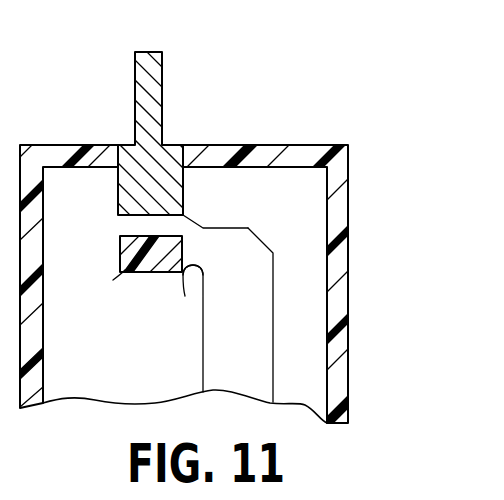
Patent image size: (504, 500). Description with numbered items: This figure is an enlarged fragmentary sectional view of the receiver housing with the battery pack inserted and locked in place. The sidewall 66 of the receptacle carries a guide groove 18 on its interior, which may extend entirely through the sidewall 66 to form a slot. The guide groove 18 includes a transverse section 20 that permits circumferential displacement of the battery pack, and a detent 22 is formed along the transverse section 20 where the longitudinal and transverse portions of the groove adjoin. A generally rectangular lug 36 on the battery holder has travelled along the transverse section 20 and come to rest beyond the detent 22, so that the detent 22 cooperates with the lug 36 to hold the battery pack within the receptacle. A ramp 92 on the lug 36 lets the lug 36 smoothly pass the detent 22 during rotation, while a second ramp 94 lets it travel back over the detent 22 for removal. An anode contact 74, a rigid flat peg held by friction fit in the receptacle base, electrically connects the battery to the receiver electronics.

The anode contact 74 is at (151, 52).
The sidewall 66 is at (349, 170).
The lug 36 is at (121, 247).
The ramp 92 is at (113, 280).
The transverse section 20 is at (188, 230).
The guide groove 18 is at (260, 311).
The second ramp 94 is at (183, 328).
The detent 22 is at (195, 266).